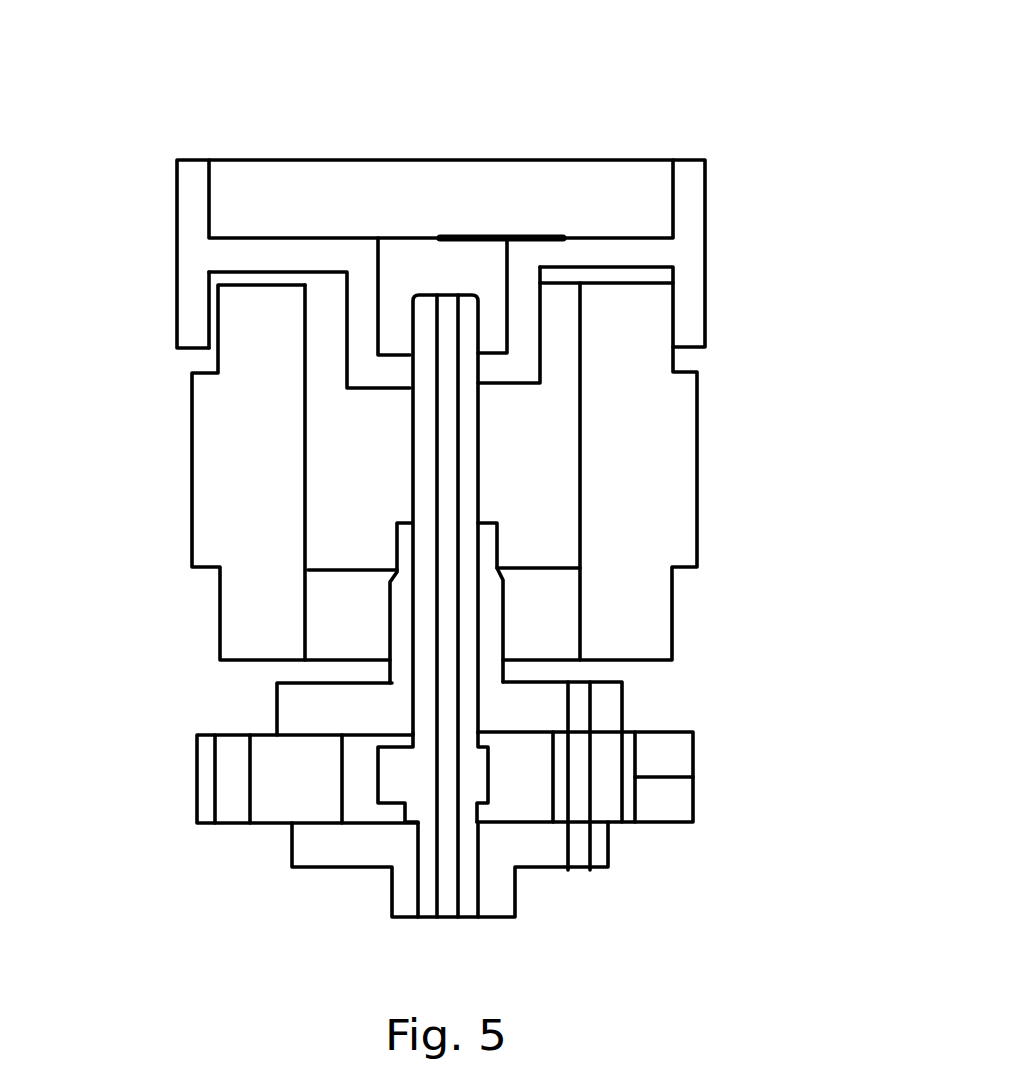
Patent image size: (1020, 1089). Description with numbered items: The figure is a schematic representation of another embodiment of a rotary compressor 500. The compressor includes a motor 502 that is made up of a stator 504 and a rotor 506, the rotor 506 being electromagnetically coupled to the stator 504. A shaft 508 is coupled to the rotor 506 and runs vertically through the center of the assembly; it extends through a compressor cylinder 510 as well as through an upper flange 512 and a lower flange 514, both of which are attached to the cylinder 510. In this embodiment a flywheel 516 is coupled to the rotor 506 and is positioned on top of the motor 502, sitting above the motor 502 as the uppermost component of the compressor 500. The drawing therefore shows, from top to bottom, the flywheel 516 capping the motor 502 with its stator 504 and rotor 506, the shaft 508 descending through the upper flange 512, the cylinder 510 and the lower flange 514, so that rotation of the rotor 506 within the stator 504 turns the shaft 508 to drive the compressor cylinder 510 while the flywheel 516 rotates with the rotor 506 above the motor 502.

The rotary compressor 500 is at (712, 101).
The motor 502 is at (728, 542).
The stator 504 is at (647, 428).
The rotor 506 is at (362, 428).
The shaft 508 is at (423, 312).
The compressor cylinder 510 is at (278, 785).
The upper flange 512 is at (345, 700).
The lower flange 514 is at (535, 853).
The flywheel 516 is at (693, 278).